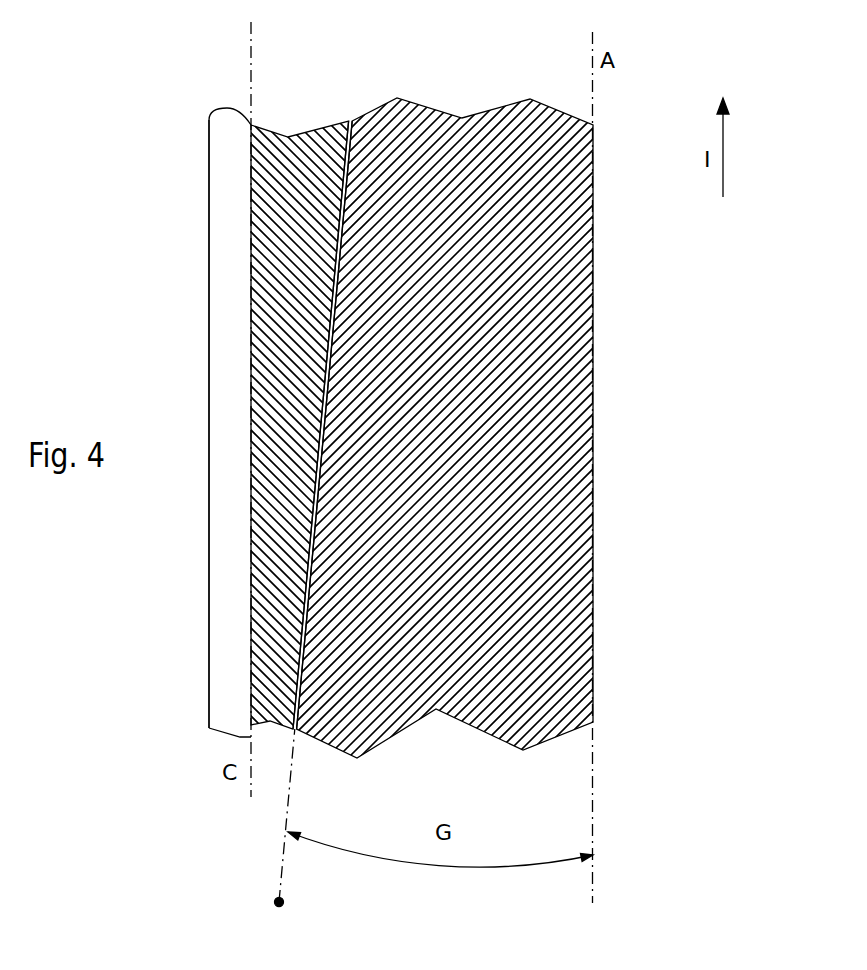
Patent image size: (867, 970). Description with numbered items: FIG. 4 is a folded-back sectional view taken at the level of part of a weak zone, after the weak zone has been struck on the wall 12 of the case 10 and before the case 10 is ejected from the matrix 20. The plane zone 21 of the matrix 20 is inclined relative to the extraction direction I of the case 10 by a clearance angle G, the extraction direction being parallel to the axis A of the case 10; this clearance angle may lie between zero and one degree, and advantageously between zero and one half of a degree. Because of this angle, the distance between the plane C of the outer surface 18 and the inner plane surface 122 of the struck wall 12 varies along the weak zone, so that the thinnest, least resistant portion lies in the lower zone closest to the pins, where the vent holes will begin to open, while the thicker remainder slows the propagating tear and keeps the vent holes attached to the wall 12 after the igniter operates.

The case 10 is at (159, 422).
The outer surface 18 is at (142, 424).
The wall 12 is at (433, 430).
The matrix 20 is at (433, 430).
The inner plane surface 122 is at (279, 399).
The plane zone 21 is at (217, 818).